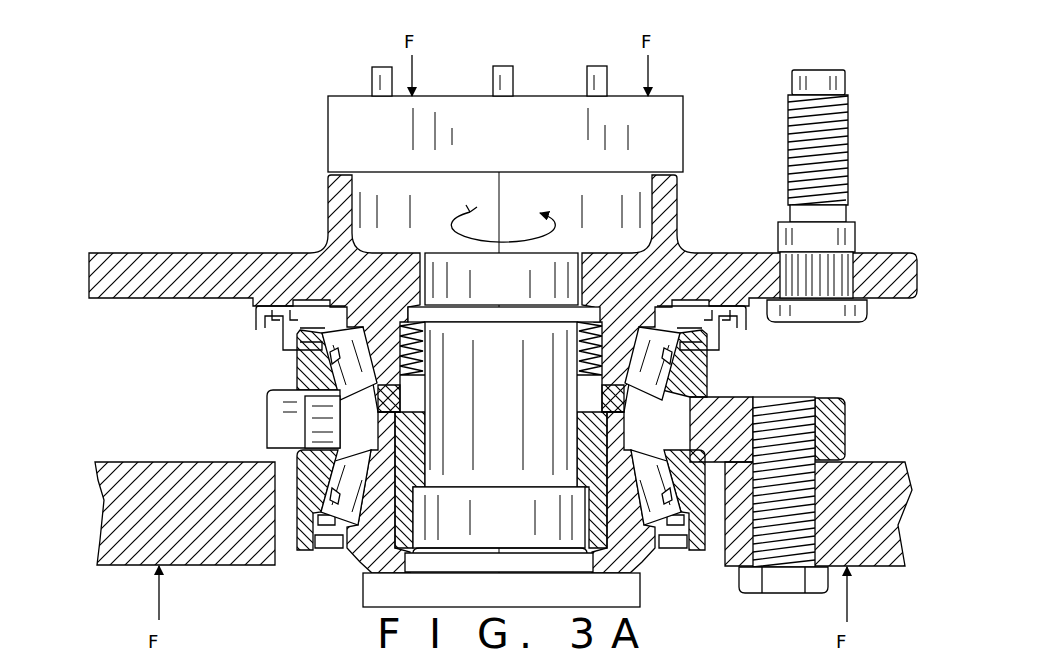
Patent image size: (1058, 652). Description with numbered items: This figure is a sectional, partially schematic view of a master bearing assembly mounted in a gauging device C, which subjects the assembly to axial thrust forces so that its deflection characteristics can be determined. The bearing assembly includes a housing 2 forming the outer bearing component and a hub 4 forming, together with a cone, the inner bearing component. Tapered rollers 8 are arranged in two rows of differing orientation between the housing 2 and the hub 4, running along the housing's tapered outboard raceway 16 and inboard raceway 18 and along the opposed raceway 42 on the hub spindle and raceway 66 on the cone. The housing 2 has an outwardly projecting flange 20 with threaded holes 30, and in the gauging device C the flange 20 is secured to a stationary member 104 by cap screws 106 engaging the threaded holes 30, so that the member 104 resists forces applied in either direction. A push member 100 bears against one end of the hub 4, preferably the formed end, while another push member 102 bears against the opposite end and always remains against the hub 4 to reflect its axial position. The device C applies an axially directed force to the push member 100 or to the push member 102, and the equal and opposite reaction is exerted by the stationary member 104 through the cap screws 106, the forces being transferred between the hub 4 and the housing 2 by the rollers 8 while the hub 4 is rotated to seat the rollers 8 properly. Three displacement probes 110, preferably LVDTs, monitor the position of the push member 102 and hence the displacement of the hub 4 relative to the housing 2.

The housing 2 is at (687, 383).
The hub 4 is at (915, 277).
The tapered rollers 8 is at (413, 365).
The outboard raceway 16 is at (357, 362).
The inboard raceway 18 is at (310, 445).
The flange 20 is at (828, 413).
The threaded holes 30 is at (783, 423).
The outboard raceway 42 is at (647, 347).
The tapered raceway 66 is at (643, 470).
The push member 100 is at (622, 590).
The push member 102 is at (665, 122).
The stationary member 104 is at (197, 547).
The cap screws 106 is at (795, 582).
The displacement probes 110 is at (381, 70).
The gauging device C is at (872, 70).